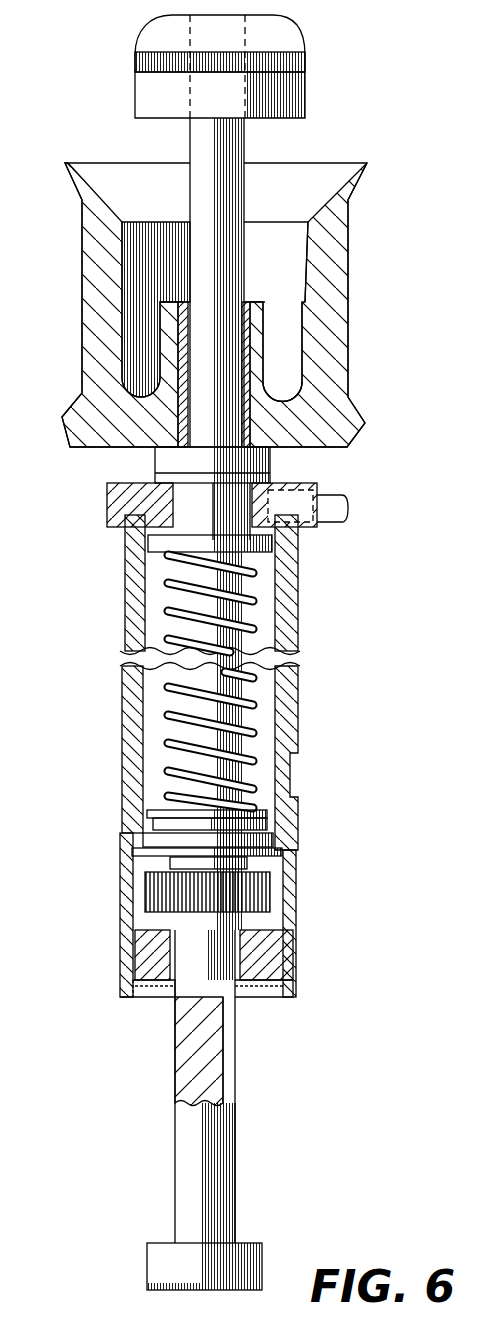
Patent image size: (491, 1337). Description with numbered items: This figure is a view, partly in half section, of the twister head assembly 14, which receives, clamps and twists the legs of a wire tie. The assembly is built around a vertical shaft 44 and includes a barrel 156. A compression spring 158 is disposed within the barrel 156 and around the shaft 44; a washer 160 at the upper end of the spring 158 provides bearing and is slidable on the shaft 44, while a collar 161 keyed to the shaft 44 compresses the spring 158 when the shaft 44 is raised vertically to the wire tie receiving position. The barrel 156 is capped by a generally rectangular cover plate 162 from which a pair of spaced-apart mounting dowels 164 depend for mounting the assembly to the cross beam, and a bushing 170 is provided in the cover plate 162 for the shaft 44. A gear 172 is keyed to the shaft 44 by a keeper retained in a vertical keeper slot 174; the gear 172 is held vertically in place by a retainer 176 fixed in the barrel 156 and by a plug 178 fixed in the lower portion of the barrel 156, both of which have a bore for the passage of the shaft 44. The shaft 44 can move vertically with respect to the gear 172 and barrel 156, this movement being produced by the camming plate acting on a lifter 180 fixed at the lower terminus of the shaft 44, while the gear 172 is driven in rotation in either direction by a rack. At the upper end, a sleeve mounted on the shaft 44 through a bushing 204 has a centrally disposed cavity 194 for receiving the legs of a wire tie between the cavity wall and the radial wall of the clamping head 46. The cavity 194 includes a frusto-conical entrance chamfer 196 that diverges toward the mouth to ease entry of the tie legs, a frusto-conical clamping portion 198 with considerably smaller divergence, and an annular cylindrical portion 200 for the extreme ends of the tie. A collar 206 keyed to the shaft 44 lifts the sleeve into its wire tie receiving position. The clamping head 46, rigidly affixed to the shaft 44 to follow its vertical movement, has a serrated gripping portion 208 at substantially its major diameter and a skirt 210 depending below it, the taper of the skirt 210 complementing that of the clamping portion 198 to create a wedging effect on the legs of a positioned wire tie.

The twister head assembly 14 is at (350, 254).
The shaft 44 is at (200, 135).
The clamping head 46 is at (150, 19).
The barrel 156 is at (283, 618).
The compression spring 158 is at (165, 705).
The washer 160 is at (150, 555).
The collar 161 is at (150, 798).
The cover plate 162 is at (302, 530).
The mounting dowels 164 is at (347, 508).
The bushing 170 is at (227, 481).
The gear 172 is at (255, 900).
The keeper slot 174 is at (228, 1092).
The retainer 176 is at (275, 868).
The plug 178 is at (155, 950).
The lifter 180 is at (147, 1250).
The cavity 194 is at (294, 275).
The entrance chamfer 196 is at (300, 215).
The clamping portion 198 is at (305, 286).
The annular cylindrical portion 200 is at (300, 348).
The bushing 204 is at (125, 340).
The collar 206 is at (165, 453).
The serrated gripping portion 208 is at (305, 62).
The skirt 210 is at (152, 88).